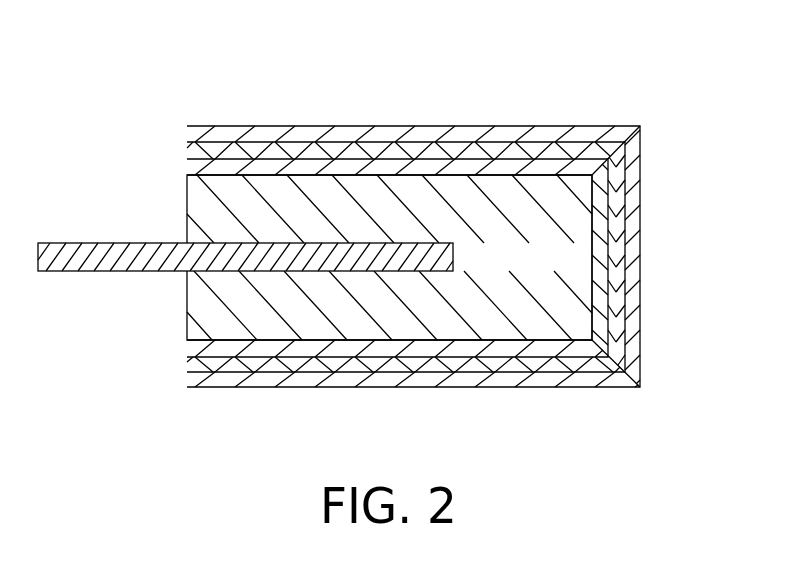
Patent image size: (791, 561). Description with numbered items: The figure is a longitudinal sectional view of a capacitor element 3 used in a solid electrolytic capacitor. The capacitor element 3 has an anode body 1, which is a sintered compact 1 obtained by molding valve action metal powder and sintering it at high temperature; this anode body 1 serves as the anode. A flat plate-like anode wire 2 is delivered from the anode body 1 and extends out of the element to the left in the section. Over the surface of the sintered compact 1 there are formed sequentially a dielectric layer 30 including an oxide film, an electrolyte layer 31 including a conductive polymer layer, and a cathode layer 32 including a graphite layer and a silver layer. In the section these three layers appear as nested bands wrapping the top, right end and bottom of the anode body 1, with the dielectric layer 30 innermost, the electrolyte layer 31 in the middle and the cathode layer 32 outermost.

The anode body 1 is at (563, 302).
The anode wire 2 is at (70, 255).
The capacitor element 3 is at (643, 68).
The dielectric layer 30 is at (598, 260).
The electrolyte layer 31 is at (617, 212).
The cathode layer 32 is at (630, 163).